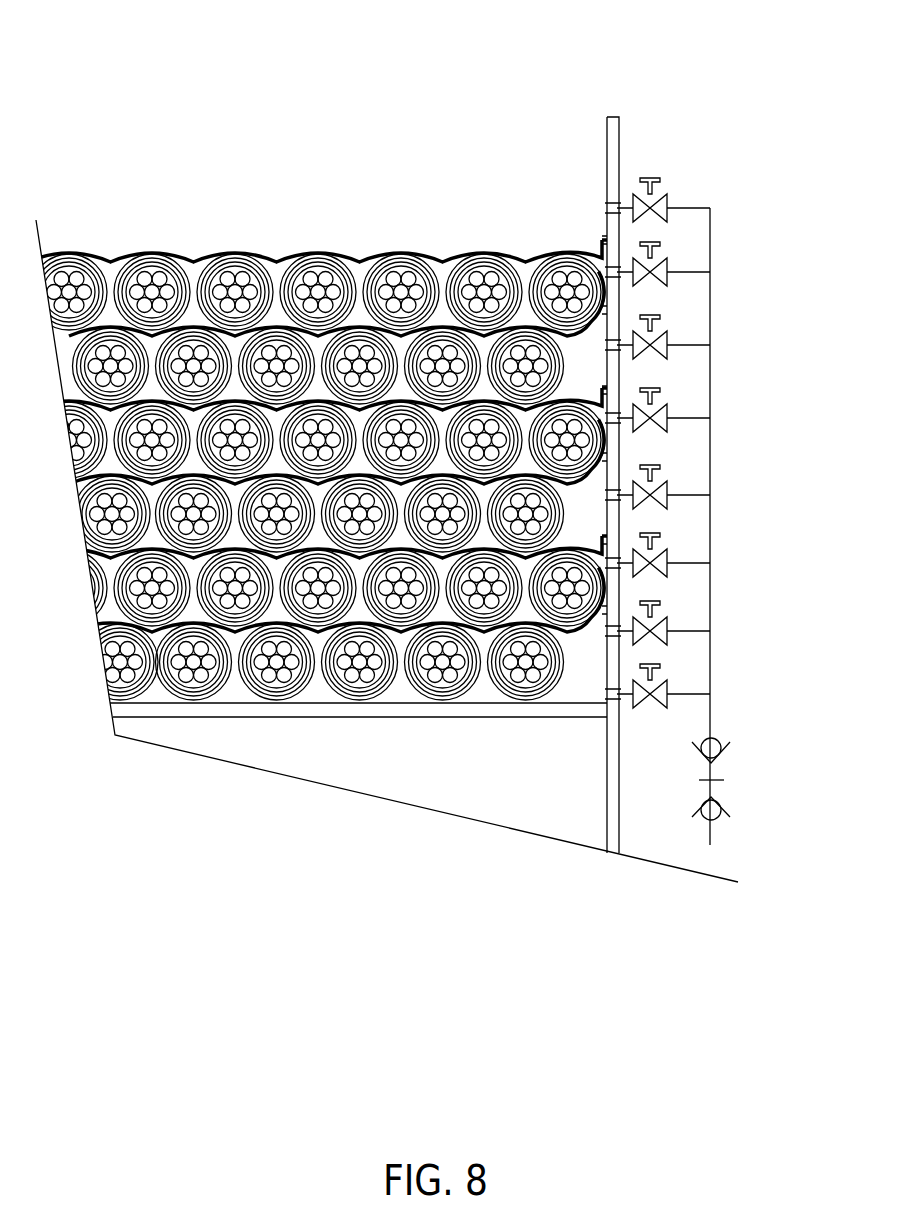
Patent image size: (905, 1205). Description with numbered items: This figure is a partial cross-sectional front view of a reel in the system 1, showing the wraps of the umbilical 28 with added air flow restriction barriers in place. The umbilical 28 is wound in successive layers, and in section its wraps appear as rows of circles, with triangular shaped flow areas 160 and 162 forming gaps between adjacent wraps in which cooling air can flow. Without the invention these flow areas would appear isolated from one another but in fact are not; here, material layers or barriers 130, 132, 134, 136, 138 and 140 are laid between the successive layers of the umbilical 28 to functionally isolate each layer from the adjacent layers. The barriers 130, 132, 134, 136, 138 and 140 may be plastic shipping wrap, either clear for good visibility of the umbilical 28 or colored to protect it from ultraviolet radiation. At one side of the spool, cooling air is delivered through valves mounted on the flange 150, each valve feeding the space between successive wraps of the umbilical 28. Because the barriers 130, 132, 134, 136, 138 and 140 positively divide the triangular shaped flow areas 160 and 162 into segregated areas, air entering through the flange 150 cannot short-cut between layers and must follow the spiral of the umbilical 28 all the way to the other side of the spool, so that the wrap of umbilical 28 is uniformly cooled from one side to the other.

The system 1 is at (800, 120).
The umbilical 28 is at (158, 247).
The barrier 130 is at (617, 238).
The barrier 132 is at (613, 310).
The barrier 134 is at (605, 390).
The barrier 136 is at (605, 457).
The barrier 138 is at (605, 540).
The barrier 140 is at (605, 610).
The flange 150 is at (620, 175).
The triangular shaped flow area 160 is at (278, 302).
The triangular shaped flow area 162 is at (316, 345).